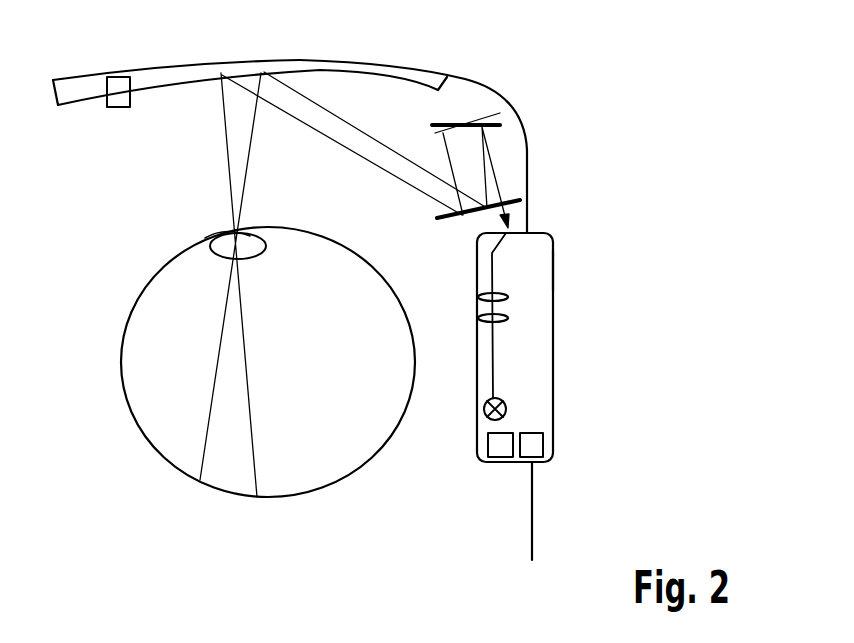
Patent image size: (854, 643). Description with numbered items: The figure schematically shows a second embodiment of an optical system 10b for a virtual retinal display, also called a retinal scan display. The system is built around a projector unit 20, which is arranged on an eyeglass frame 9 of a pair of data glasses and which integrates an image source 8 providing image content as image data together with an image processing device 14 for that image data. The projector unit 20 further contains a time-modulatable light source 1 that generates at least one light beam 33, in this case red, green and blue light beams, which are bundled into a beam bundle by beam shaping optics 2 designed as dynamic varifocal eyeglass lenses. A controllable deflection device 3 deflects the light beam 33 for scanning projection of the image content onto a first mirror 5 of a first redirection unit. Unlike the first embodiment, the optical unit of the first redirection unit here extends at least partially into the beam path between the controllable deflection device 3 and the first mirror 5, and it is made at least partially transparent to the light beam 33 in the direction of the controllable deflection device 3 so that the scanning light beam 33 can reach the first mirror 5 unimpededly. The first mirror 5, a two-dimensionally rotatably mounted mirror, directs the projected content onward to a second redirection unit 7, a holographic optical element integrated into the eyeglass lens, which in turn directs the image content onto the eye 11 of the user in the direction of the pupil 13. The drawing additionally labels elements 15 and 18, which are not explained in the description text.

The light source 1 is at (507, 407).
The beam shaping optics 2 is at (508, 295).
The controllable deflection device 3 is at (550, 234).
The first mirror 5 is at (500, 129).
The second redirection unit 7 is at (367, 67).
The image source 8 is at (500, 458).
The eyeglass frame 9 is at (532, 493).
The optical system 10b is at (653, 150).
The eye 11 is at (148, 352).
The pupil 13 is at (215, 250).
The image processing device 14 is at (543, 443).
The sensor 15 is at (120, 88).
The cornea 18 is at (220, 252).
The projector unit 20 is at (555, 270).
The light beam 33 is at (494, 350).